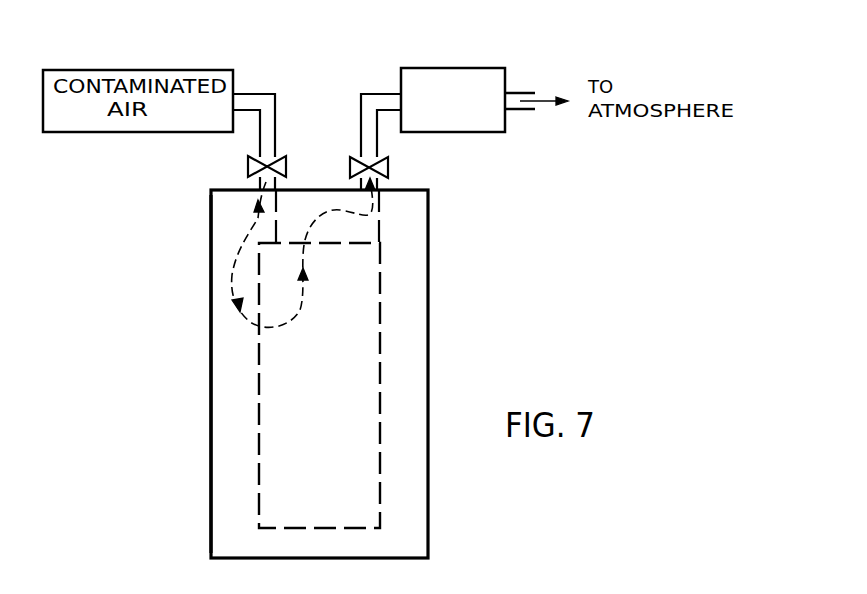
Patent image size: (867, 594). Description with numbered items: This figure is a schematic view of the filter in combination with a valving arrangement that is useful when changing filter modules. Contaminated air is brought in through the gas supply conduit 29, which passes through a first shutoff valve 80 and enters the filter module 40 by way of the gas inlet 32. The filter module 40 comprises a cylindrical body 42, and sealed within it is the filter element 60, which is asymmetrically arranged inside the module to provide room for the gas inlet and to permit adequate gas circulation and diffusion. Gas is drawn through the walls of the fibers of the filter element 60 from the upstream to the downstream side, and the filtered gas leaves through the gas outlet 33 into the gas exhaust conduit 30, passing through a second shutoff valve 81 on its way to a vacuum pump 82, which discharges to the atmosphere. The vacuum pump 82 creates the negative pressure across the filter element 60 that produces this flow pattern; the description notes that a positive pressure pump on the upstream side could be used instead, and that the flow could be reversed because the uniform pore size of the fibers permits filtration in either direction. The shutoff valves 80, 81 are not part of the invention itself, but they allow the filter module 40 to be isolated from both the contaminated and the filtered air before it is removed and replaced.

The gas supply conduit 29 is at (250, 100).
The shutoff valve 80 is at (251, 160).
The gas exhaust conduit 30 is at (373, 100).
The vacuum pump 82 is at (482, 76).
The shutoff valve 81 is at (355, 160).
The gas inlet 32 is at (263, 192).
The gas outlet 33 is at (373, 197).
The filter module 40 is at (193, 418).
The cylindrical body 42 is at (211, 473).
The filter element 60 is at (380, 383).